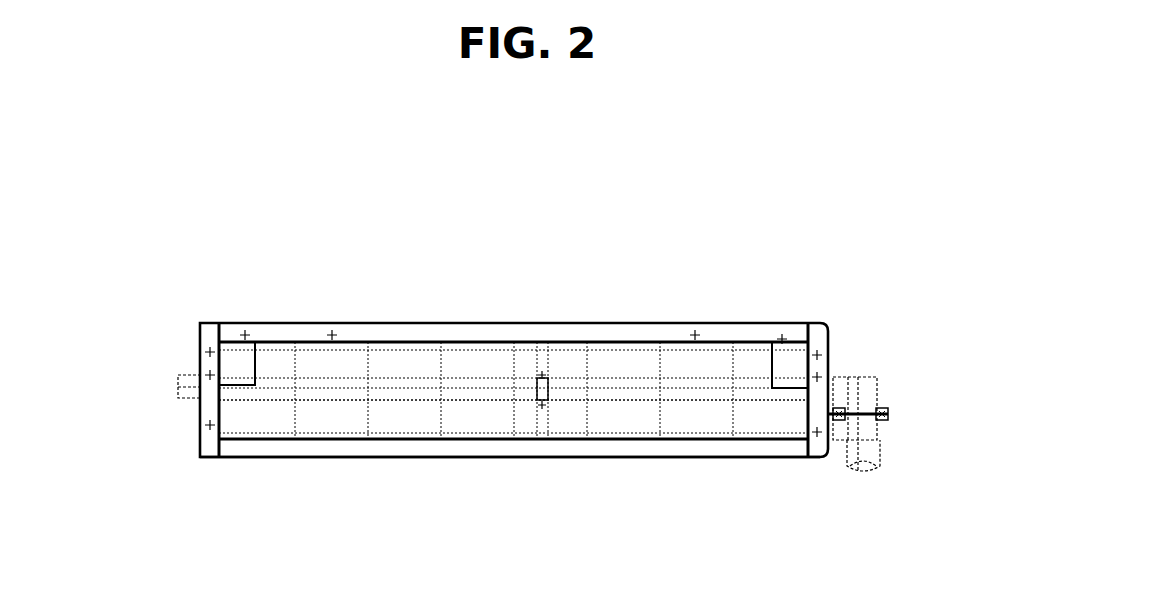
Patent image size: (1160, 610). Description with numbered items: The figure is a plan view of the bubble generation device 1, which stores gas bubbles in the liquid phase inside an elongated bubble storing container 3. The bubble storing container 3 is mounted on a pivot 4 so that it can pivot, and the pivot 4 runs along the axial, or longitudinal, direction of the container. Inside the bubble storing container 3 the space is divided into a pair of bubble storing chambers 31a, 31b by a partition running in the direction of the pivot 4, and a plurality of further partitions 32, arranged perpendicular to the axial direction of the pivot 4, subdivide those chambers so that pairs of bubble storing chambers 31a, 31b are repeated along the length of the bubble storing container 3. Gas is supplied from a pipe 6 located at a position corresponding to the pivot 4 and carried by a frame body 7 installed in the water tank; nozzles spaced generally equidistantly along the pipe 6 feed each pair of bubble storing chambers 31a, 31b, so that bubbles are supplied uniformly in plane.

The bubble generation device 1 is at (225, 262).
The bubble storing container 3 is at (220, 187).
The bubble storing chamber 31a is at (387, 415).
The bubble storing chamber 31b is at (413, 363).
The partitions 32 is at (295, 362).
The pivot 4 is at (463, 400).
The pipe 6 is at (870, 375).
The frame body 7 is at (615, 458).